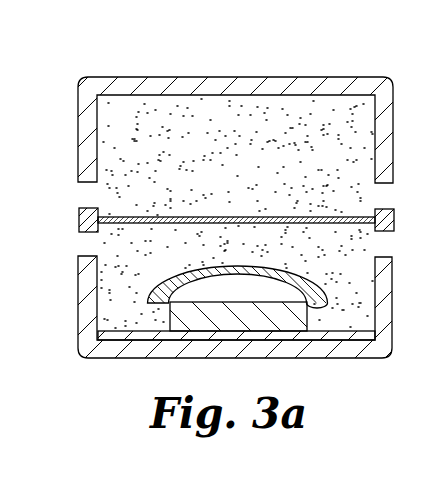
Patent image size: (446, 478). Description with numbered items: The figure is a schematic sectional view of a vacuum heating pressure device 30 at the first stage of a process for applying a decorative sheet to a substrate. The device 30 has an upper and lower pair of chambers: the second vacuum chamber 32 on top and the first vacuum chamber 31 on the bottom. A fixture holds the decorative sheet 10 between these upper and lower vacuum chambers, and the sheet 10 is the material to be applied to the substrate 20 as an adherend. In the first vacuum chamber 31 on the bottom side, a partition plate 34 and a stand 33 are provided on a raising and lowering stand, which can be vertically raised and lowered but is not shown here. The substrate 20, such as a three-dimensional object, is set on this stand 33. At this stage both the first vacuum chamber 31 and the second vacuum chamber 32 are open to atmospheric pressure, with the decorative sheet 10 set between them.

The vacuum heating pressure device 30 is at (259, 62).
The first vacuum chamber 31 is at (113, 292).
The second vacuum chamber 32 is at (111, 130).
The decorative sheet 10 is at (132, 217).
The substrate 20 is at (310, 296).
The stand 33 is at (257, 316).
The partition plate 34 is at (148, 334).